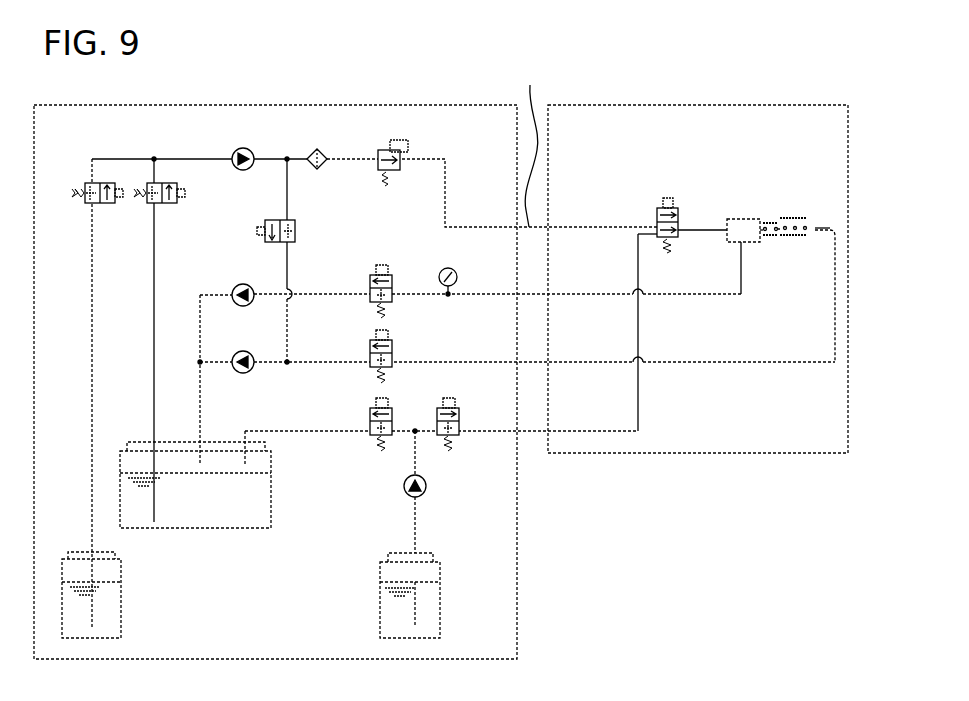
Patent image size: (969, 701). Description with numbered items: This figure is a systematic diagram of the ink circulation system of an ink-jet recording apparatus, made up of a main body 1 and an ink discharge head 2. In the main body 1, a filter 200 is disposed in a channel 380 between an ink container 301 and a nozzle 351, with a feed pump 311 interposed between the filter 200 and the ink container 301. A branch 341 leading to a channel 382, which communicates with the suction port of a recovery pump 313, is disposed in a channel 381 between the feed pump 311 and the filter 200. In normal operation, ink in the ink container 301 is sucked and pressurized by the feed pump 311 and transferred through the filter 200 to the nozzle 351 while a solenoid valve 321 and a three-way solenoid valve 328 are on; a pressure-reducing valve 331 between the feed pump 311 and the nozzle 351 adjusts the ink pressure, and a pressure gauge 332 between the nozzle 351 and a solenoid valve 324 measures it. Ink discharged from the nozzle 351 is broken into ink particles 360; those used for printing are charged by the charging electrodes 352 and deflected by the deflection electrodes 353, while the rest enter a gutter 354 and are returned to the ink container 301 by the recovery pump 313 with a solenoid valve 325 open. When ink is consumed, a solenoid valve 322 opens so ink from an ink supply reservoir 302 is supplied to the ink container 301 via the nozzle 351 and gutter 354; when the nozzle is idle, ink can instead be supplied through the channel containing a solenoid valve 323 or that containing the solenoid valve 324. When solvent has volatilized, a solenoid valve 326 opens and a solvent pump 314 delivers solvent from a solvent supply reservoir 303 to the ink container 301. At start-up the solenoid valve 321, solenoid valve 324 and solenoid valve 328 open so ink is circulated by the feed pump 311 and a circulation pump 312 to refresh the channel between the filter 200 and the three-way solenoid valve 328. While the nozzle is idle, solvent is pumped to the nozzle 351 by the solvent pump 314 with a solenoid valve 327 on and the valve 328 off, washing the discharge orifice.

The main body 1 is at (460, 105).
The ink discharge head 2 is at (630, 105).
The filter 200 is at (323, 153).
The ink container 301 is at (215, 528).
The ink supply reservoir 302 is at (122, 594).
The solvent supply reservoir 303 is at (441, 598).
The feed pump 311 is at (237, 152).
The circulation pump 312 is at (235, 289).
The recovery pump 313 is at (243, 355).
The solvent pump 314 is at (403, 487).
The solenoid valve 321 is at (151, 204).
The solenoid valve 322 is at (90, 183).
The solenoid valve 323 is at (266, 221).
The solenoid valve 324 is at (368, 280).
The solenoid valve 325 is at (368, 351).
The solenoid valve 326 is at (368, 423).
The solenoid valve 327 is at (460, 418).
The three-way solenoid valve 328 is at (657, 209).
The pressure-reducing valve 331 is at (397, 177).
The pressure gauge 332 is at (443, 270).
The branch 341 is at (288, 165).
The nozzle 351 is at (730, 217).
The charging electrodes 352 is at (771, 220).
The deflection electrodes 353 is at (794, 215).
The gutter 354 is at (840, 228).
The ink particles 360 is at (782, 245).
The channel 380 is at (533, 144).
The channel 381 is at (286, 157).
The channel 382 is at (284, 262).